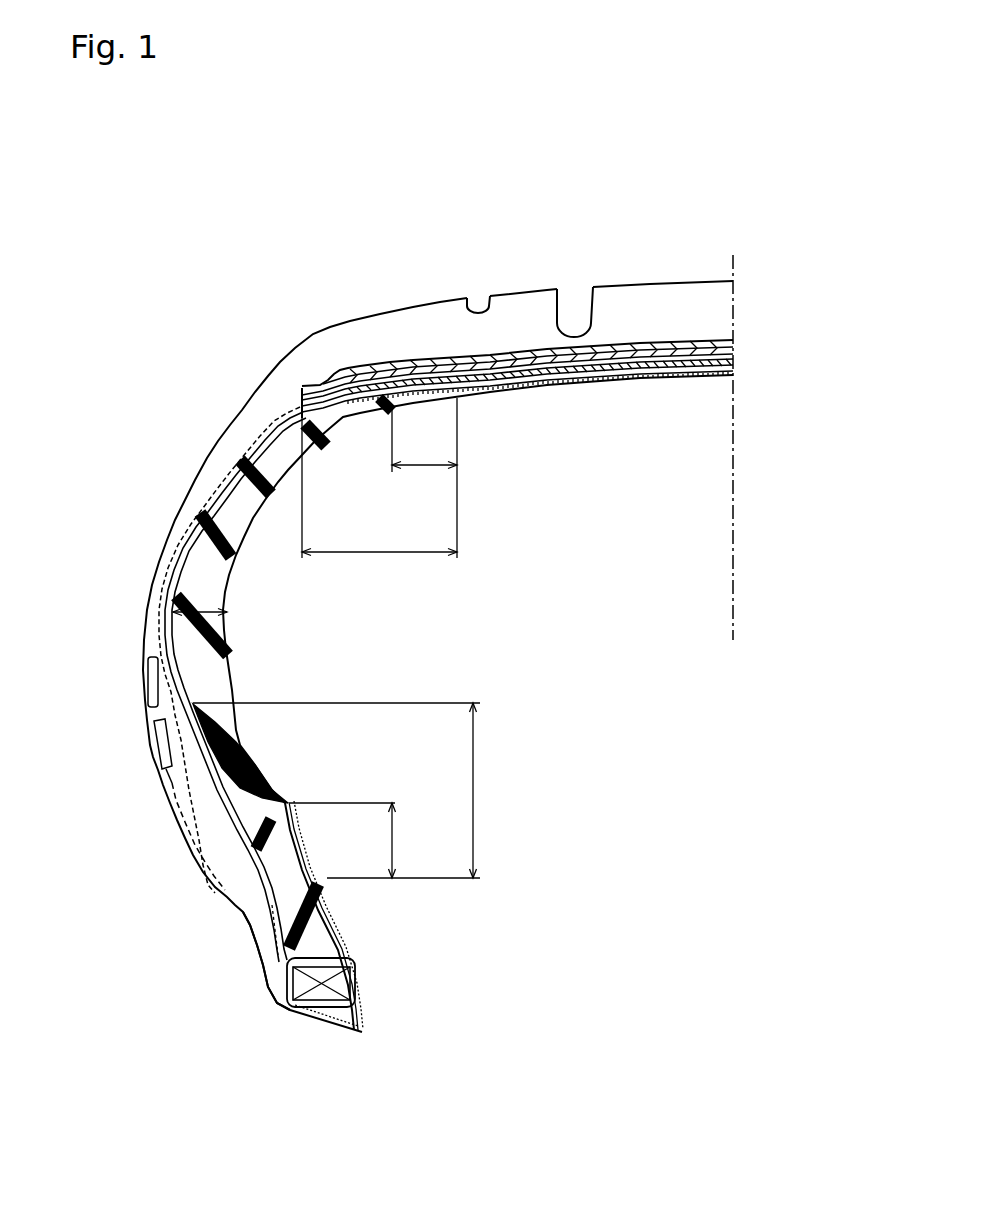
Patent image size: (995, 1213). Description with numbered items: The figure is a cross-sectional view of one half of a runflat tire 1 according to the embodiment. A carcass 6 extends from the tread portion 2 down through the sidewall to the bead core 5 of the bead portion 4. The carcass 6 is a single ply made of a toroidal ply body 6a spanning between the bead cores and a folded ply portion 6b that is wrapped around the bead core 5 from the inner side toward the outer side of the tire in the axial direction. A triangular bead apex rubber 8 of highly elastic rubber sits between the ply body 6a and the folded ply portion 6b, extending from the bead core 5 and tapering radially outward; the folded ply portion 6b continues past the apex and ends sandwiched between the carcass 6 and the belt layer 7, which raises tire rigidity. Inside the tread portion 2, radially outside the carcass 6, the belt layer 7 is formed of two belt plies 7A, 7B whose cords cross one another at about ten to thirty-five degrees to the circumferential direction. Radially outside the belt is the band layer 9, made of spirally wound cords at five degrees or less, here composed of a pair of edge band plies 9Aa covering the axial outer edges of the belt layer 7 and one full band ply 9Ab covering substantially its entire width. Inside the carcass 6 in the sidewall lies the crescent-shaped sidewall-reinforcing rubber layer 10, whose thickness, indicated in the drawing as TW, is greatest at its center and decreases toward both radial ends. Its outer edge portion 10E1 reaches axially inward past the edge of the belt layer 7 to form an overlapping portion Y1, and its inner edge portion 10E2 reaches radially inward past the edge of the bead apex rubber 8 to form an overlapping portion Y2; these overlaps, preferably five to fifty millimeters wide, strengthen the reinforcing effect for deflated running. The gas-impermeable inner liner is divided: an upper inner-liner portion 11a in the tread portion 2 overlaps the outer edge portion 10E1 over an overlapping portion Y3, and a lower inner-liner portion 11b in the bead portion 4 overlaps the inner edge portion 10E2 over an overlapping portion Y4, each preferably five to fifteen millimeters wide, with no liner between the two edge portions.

The runflat tire 1 is at (327, 266).
The tread portion 2 is at (647, 292).
The bead portion 4 is at (247, 960).
The bead core 5 is at (327, 993).
The carcass 6 is at (181, 707).
The ply body 6a is at (233, 832).
The folded ply portion 6b is at (213, 792).
The belt layer 7 is at (567, 403).
The belt ply 7A is at (677, 368).
The belt ply 7B is at (717, 377).
The bead apex rubber 8 is at (293, 878).
The band layer 9 is at (517, 260).
The edge band ply 9Aa is at (420, 372).
The full band ply 9Ab is at (398, 360).
The sidewall-reinforcing rubber layer 10 is at (212, 662).
The outer edge portion 10E1 is at (340, 420).
The inner edge portion 10E2 is at (247, 760).
The upper inner-liner portion 11a is at (513, 388).
The lower inner-liner portion 11b is at (350, 937).
The thickness of reinforcing layer TW is at (209, 617).
The overlapping portion Y1 is at (373, 553).
The overlapping portion Y2 is at (473, 790).
The overlapping portion Y3 is at (425, 466).
The overlapping portion Y4 is at (393, 842).